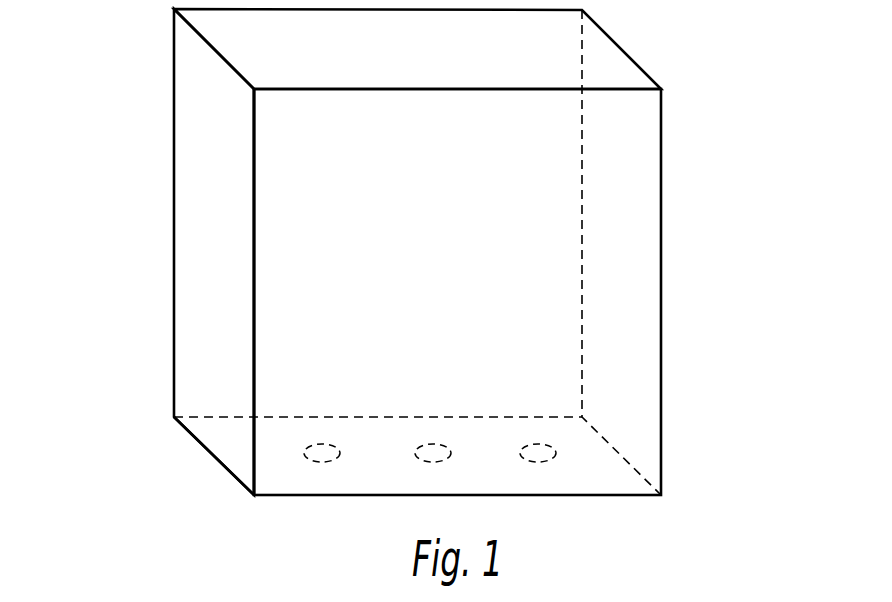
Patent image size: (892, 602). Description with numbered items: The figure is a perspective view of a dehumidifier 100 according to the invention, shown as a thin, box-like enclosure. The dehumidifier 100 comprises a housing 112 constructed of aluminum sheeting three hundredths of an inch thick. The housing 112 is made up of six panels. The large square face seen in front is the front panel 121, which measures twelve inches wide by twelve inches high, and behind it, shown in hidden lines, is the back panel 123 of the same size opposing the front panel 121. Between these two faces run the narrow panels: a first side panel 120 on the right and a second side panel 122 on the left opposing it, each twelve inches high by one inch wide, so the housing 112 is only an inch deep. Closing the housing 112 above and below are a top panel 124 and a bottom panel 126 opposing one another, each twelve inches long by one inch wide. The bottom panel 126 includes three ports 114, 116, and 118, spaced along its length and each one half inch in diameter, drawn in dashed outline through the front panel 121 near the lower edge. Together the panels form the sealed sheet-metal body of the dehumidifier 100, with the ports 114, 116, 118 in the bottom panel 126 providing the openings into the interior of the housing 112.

The dehumidifier 100 is at (141, 84).
The housing 112 is at (689, 442).
The port 114 is at (324, 462).
The port 116 is at (438, 462).
The port 118 is at (543, 462).
The first side panel 120 is at (632, 198).
The front panel 121 is at (454, 277).
The second side panel 122 is at (231, 249).
The back panel 123 is at (202, 300).
The top panel 124 is at (433, 53).
The bottom panel 126 is at (228, 440).